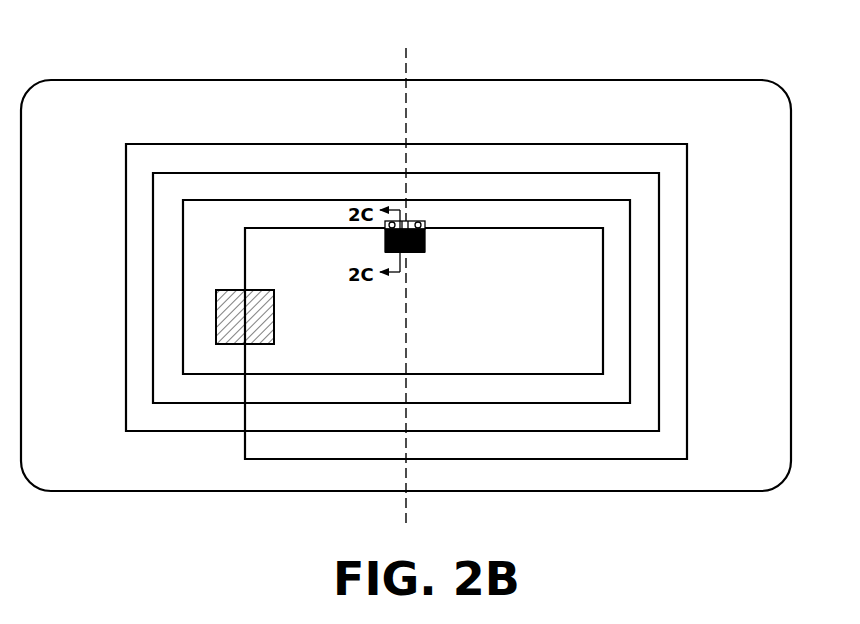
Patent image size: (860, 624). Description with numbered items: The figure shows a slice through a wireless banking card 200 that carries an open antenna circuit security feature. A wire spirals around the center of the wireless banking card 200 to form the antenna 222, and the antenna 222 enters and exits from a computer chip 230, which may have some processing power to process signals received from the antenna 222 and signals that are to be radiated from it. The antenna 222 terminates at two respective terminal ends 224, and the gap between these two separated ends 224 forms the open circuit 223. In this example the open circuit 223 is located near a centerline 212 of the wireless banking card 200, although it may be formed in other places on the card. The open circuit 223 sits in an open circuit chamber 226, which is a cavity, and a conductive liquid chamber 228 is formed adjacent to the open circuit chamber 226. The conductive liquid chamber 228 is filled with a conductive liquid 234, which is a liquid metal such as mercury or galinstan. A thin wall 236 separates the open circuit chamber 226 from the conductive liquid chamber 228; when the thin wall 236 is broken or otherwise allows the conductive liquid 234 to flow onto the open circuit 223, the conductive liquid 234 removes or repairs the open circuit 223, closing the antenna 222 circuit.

The wireless banking card 200 is at (152, 110).
The centerline 212 is at (412, 104).
The antenna 222 is at (227, 140).
The terminal ends 224 is at (387, 228).
The open circuit 223 is at (477, 219).
The open circuit chamber 226 is at (412, 225).
The conductive liquid chamber 228 is at (433, 256).
The conductive liquid 234 is at (410, 253).
The thin wall 236 is at (433, 239).
The computer chip 230 is at (262, 322).